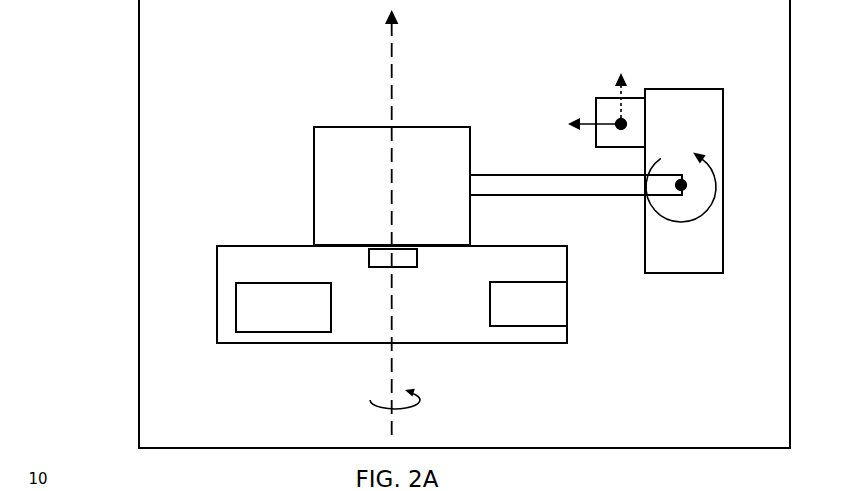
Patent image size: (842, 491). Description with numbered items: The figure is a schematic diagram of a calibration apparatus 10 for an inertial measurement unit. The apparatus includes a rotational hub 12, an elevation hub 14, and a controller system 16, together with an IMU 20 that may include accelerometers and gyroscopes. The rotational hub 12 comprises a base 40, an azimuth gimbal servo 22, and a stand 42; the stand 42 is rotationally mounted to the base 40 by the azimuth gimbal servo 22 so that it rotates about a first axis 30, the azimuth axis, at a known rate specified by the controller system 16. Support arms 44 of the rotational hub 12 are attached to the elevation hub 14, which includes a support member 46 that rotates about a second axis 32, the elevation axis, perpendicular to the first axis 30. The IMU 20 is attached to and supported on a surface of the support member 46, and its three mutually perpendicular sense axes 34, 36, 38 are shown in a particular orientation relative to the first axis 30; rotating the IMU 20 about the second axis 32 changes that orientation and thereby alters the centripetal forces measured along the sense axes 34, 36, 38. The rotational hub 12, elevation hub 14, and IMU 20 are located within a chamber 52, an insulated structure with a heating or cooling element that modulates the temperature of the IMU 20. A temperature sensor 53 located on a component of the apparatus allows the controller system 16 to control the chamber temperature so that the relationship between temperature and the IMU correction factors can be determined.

The calibration apparatus 10 is at (55, 77).
The rotational hub 12 is at (205, 291).
The elevation hub 14 is at (730, 113).
The controller system 16 is at (275, 333).
The IMU 20 is at (596, 108).
The azimuth gimbal servo 22 is at (413, 268).
The first axis 30 is at (390, 68).
The second axis 32 is at (683, 195).
The sense axis 34 is at (625, 78).
The sense axis 36 is at (570, 128).
The sense axis 38 is at (630, 120).
The base 40 is at (508, 345).
The stand 42 is at (317, 167).
The support arms 44 is at (547, 197).
The support member 46 is at (673, 273).
The chamber 52 is at (139, 231).
The temperature sensor 53 is at (565, 314).